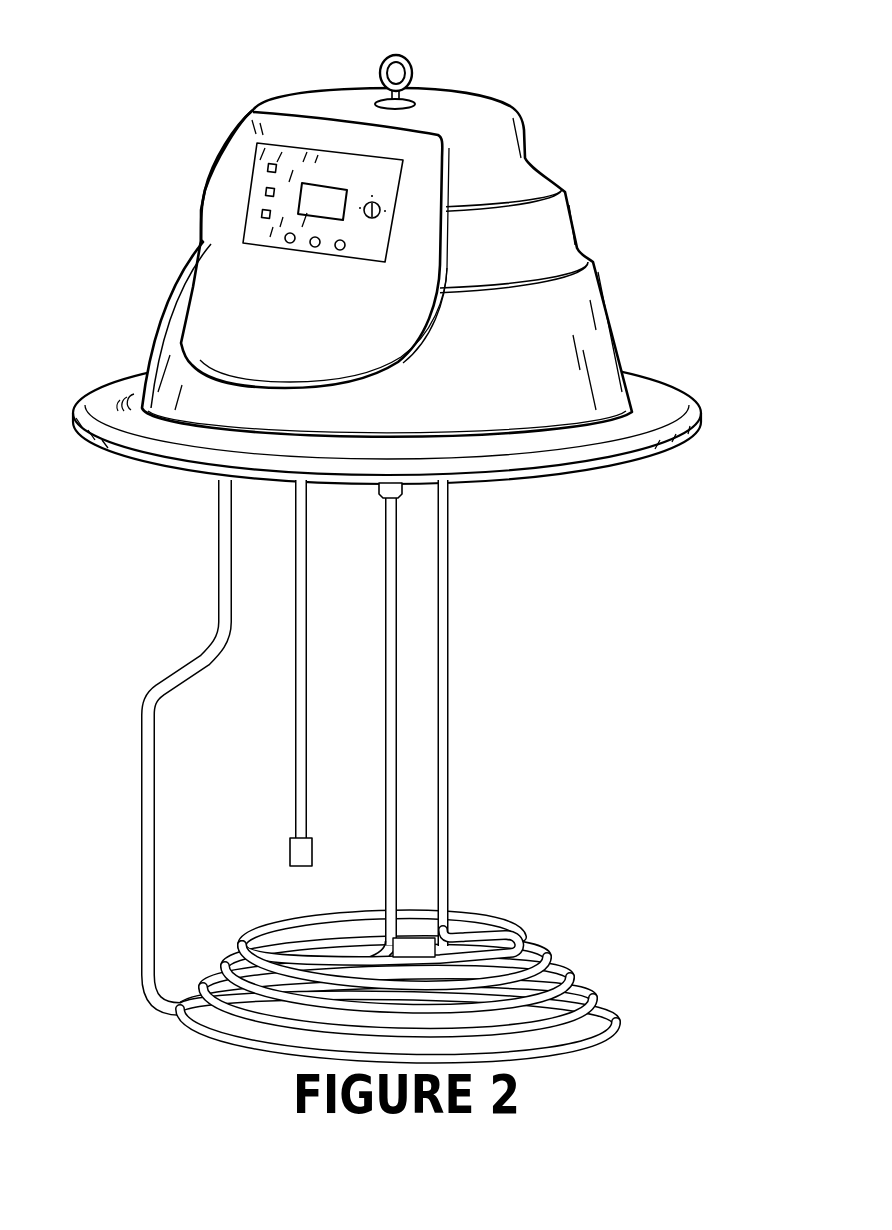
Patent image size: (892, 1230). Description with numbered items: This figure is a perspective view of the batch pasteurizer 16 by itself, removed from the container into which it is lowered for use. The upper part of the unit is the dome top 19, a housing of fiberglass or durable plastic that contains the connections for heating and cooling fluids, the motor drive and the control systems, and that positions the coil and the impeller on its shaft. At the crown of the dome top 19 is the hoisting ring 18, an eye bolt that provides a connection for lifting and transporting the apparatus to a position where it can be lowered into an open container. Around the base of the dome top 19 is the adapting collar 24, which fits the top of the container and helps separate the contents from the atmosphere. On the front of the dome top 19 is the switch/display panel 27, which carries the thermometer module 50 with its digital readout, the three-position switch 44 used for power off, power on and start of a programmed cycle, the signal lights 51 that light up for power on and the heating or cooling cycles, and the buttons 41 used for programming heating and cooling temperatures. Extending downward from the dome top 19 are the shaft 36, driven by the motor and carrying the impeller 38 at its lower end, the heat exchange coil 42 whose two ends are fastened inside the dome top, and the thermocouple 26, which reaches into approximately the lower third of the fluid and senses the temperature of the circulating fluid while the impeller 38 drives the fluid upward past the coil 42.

The batch pasteurizer 16 is at (437, 529).
The hoisting ring 18 is at (396, 56).
The dome top 19 is at (597, 263).
The adapting collar 24 is at (703, 408).
The thermocouple 26 is at (296, 736).
The switch/display panel 27 is at (386, 178).
The shaft 36 is at (384, 547).
The impeller 38 is at (382, 769).
The buttons 41 is at (339, 250).
The heat exchange coil 42 is at (452, 547).
The switch 44 is at (376, 219).
The thermometer module 50 is at (323, 182).
The signal lights 51 is at (261, 214).